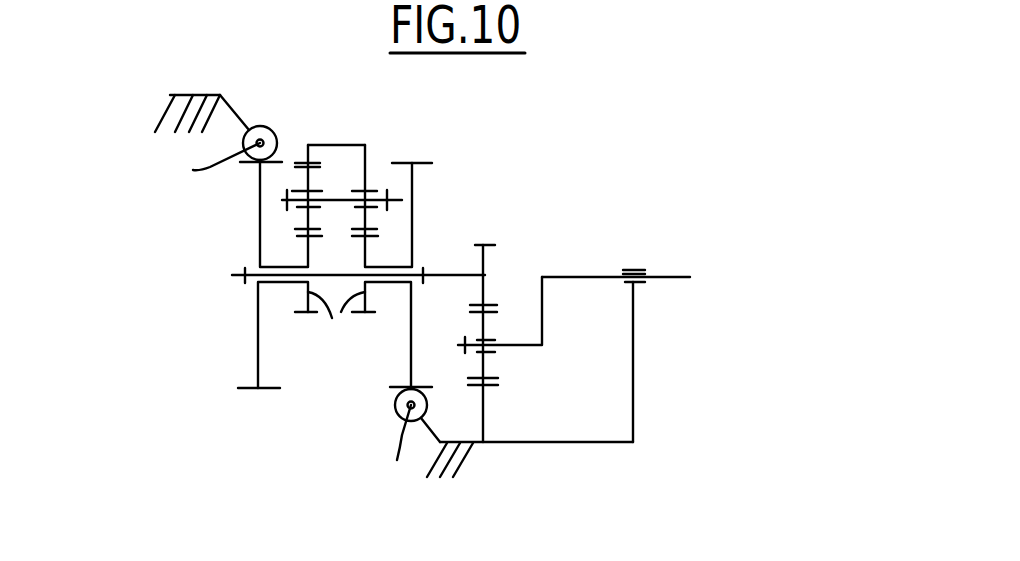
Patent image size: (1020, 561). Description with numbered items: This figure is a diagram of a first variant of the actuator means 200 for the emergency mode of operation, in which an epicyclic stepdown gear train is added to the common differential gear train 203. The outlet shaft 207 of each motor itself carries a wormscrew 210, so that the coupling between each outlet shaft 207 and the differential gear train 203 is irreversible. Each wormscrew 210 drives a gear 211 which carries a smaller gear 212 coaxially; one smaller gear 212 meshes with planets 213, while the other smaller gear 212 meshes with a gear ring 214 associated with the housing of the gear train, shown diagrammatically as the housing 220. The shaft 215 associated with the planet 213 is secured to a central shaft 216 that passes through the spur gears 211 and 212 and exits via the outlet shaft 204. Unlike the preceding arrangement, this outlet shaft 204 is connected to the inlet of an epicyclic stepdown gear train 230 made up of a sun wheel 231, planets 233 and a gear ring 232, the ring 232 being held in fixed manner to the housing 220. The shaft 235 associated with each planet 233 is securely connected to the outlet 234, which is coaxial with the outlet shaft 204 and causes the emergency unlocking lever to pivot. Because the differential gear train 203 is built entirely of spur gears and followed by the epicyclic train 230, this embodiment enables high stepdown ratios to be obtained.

The automatic transmission 200 is at (660, 84).
The common differential gear train 203 is at (370, 169).
The outlet shaft 204 is at (362, 235).
The outlet shaft of motor 207 is at (278, 320).
The wormscrew 210 is at (336, 247).
The gear 211 is at (295, 335).
The smaller gear 212 is at (336, 323).
The planet 213 is at (258, 199).
The gear ring 214 is at (345, 114).
The shaft 215 is at (346, 173).
The central shaft 216 is at (255, 250).
The housing 220 is at (357, 290).
The epicyclic stepdown gear train 230 is at (566, 252).
The sun wheel 231 is at (524, 324).
The gear ring 232 is at (522, 405).
The planet 233 is at (503, 295).
The outlet shaft 234 is at (636, 356).
The shaft 235 is at (536, 352).